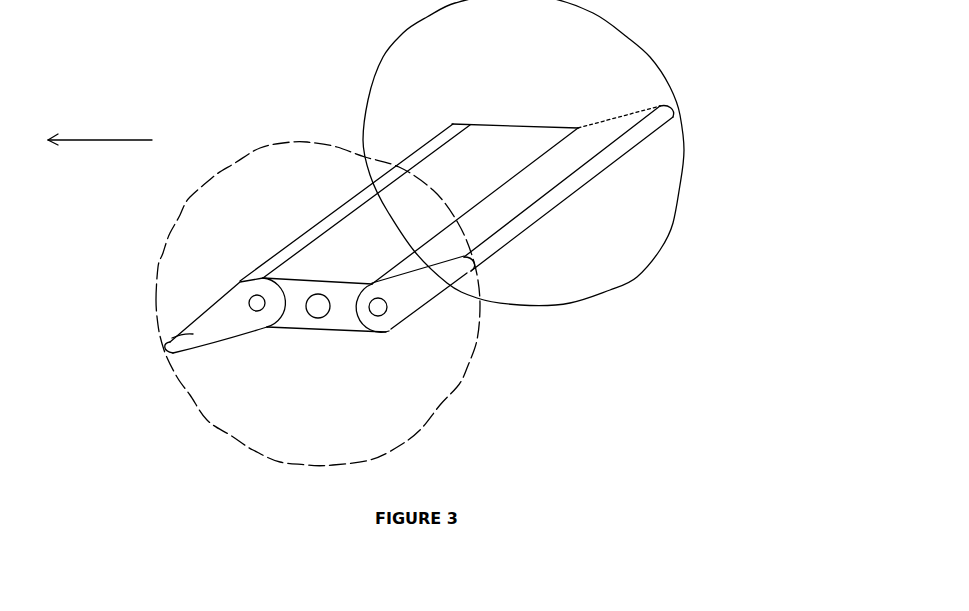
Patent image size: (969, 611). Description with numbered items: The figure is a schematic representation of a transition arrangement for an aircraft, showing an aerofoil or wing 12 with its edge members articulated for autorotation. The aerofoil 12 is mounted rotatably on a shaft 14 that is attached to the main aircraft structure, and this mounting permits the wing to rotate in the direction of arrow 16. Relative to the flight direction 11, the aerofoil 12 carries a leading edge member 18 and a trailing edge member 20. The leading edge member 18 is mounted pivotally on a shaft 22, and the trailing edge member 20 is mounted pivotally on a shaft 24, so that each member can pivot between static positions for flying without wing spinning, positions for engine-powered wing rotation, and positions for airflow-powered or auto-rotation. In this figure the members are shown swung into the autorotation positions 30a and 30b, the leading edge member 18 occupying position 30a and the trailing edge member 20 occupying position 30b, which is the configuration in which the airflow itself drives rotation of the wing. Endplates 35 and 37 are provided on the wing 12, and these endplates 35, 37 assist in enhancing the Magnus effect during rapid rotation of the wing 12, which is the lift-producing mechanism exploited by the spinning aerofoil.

The flight direction 11 is at (105, 134).
The aerofoil 12 is at (488, 171).
The shaft 14 is at (318, 318).
The arrow 16 is at (180, 252).
The leading edge member 18 is at (170, 338).
The trailing edge member 20 is at (610, 158).
The shaft 22 is at (250, 298).
The shaft 24 is at (390, 331).
The autorotation position of leading edge member 30a is at (212, 343).
The autorotation position of trailing edge member 30b is at (615, 117).
The endplate 35 is at (433, 413).
The endplate 37 is at (641, 44).